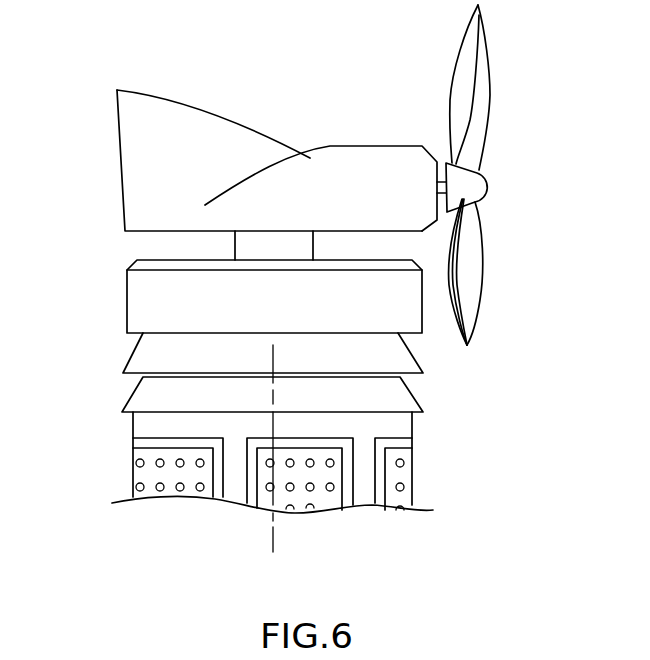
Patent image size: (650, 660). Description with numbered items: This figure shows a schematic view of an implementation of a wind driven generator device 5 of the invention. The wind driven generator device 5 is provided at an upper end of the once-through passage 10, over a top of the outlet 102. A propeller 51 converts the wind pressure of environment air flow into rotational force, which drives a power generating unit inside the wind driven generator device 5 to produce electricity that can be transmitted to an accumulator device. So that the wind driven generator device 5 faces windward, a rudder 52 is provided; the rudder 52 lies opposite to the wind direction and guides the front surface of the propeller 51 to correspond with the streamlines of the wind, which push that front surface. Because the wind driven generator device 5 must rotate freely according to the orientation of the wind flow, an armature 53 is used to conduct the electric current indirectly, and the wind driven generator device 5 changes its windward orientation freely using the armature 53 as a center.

The wind driven generator device 5 is at (373, 160).
The propeller 51 is at (483, 95).
The rudder 52 is at (142, 137).
The armature 53 is at (273, 243).
The outlet 102 is at (135, 352).
The once-through passage 10 is at (268, 533).